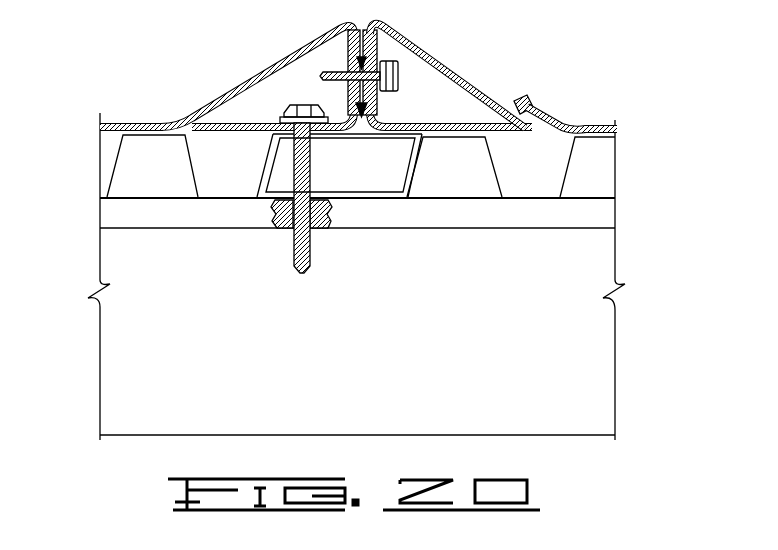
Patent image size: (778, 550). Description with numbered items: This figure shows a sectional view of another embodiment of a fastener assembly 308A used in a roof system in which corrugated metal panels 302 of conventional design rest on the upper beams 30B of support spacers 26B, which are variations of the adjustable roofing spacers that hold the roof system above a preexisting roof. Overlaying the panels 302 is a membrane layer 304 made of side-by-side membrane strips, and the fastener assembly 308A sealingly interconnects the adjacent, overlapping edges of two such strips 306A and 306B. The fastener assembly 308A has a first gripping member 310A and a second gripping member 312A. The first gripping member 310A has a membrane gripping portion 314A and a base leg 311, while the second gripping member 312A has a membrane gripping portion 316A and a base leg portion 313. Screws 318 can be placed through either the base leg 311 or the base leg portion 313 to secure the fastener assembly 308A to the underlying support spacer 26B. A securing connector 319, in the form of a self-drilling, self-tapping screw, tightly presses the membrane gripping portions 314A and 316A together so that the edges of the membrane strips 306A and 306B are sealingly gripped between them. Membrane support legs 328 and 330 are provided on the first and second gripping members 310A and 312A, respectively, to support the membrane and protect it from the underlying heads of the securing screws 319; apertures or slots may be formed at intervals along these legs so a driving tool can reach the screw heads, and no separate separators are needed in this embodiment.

The support spacer 26B is at (112, 211).
The upper beam 30B is at (595, 217).
The corrugated metal panel 302 is at (192, 162).
The membrane layer 304 is at (128, 121).
The membrane strip 306A is at (268, 61).
The membrane strip 306B is at (588, 125).
The fastener assembly 308A is at (455, 62).
The first gripping member 310A is at (302, 44).
The base leg 311 is at (217, 126).
The second gripping member 312A is at (470, 73).
The base leg portion 313 is at (427, 124).
The membrane gripping portion 314A is at (344, 108).
The membrane gripping portion 316A is at (409, 118).
The screw 318 is at (399, 76).
The securing connector 319 is at (305, 252).
The membrane support leg 328 is at (306, 56).
The membrane support leg 330 is at (496, 100).